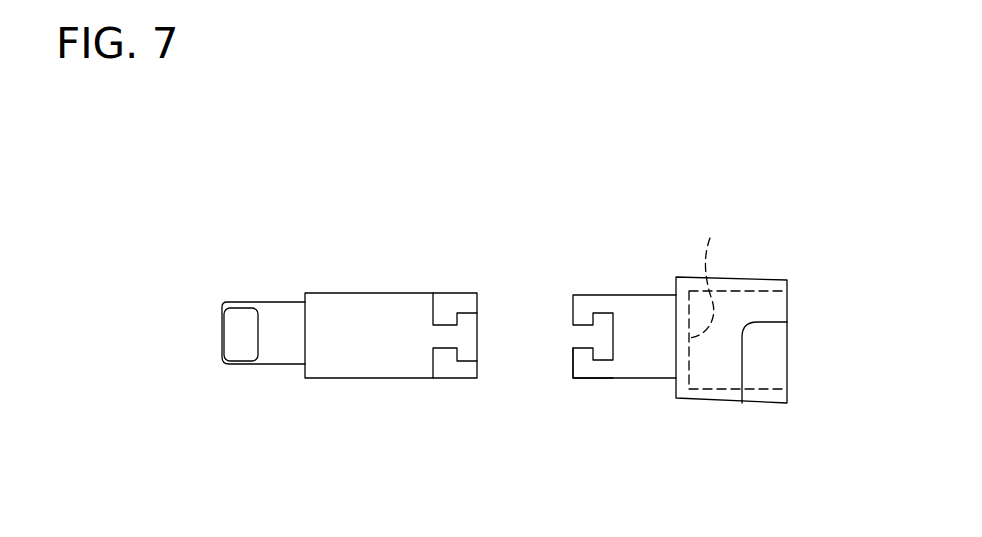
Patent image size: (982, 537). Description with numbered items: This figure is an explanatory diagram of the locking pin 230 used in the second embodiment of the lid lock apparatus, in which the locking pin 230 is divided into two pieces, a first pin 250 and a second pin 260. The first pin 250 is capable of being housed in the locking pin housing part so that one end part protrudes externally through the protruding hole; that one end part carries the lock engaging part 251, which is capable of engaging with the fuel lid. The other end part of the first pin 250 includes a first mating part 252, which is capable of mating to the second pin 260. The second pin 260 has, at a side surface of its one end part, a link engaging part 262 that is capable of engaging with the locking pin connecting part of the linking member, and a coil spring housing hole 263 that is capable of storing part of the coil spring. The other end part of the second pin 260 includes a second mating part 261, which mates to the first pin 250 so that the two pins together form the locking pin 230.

The locking pin 230 is at (633, 182).
The first pin 250 is at (405, 308).
The lock engaging part 251 is at (240, 350).
The first mating part 252 is at (452, 370).
The second pin 260 is at (647, 310).
The second mating part 261 is at (583, 368).
The link engaging part 262 is at (770, 287).
The coil spring housing hole 263 is at (711, 274).